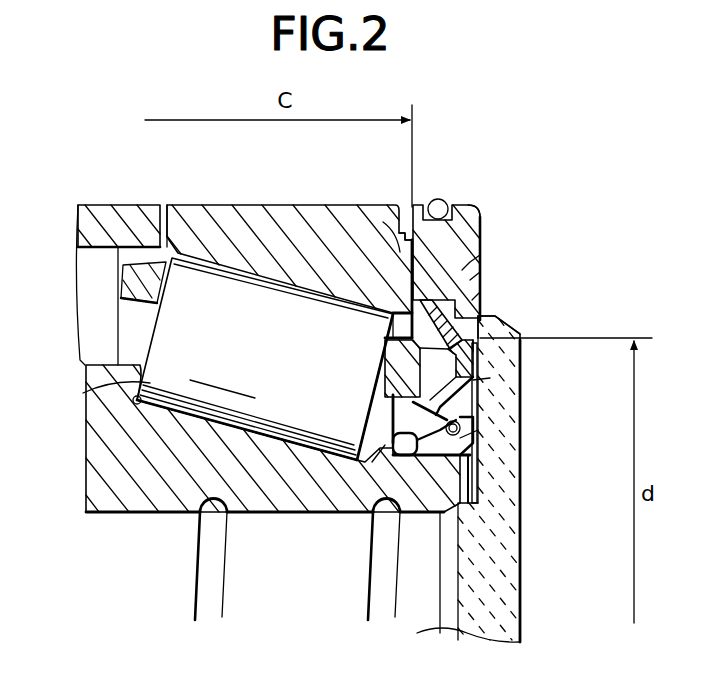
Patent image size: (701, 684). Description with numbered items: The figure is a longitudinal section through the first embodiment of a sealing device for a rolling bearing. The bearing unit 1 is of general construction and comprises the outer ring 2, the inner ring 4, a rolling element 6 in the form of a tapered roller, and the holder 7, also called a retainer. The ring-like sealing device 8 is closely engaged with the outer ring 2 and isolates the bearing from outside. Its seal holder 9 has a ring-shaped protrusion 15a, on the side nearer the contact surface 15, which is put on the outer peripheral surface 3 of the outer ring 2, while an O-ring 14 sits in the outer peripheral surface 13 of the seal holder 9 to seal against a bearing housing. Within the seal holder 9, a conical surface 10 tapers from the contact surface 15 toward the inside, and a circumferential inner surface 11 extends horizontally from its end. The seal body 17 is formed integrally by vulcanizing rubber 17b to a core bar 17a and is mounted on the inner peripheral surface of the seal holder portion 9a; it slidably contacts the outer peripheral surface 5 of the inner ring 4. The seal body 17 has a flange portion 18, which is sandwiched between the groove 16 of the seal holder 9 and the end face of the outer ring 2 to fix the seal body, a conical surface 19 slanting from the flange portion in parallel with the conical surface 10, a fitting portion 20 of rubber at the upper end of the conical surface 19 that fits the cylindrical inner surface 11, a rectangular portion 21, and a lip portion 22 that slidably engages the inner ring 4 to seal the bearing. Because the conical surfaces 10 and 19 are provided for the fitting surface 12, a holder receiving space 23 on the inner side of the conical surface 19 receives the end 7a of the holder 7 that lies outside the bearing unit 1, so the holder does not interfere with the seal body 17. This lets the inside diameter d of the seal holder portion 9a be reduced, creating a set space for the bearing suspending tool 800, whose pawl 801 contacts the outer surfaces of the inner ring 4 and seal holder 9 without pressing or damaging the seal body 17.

The bearing unit 1 is at (272, 199).
The outer ring 2 is at (211, 205).
The outer peripheral surface 3 is at (481, 250).
The inner ring 4 is at (160, 517).
The outer peripheral surface 5 is at (478, 468).
The rolling element 6 is at (133, 398).
The holder 7 is at (374, 381).
The end of the holder 7a is at (372, 402).
The sealing device 8 is at (482, 218).
The seal holder 9 is at (483, 207).
The seal holder portion 9a is at (497, 337).
The conical surface 10 is at (386, 346).
The circumferential inner surface 11 is at (492, 320).
The fitting surface 12 is at (388, 327).
The outer peripheral surface 13 is at (462, 205).
The O-ring 14 is at (443, 199).
The contact surface 15 is at (378, 204).
The protrusion 15a is at (413, 204).
The groove 16 is at (396, 290).
The seal body 17 is at (394, 421).
The core bar 17a is at (480, 276).
The rubber 17b is at (483, 417).
The flange portion 18 is at (482, 258).
The conical surface 19 is at (484, 298).
The fitting portion 20 is at (480, 347).
The rectangular portion 21 is at (490, 378).
The lip portion 22 is at (483, 438).
The holder receiving space 23 is at (385, 445).
The bearing suspending tool 800 is at (513, 621).
The pawl 801 is at (513, 552).